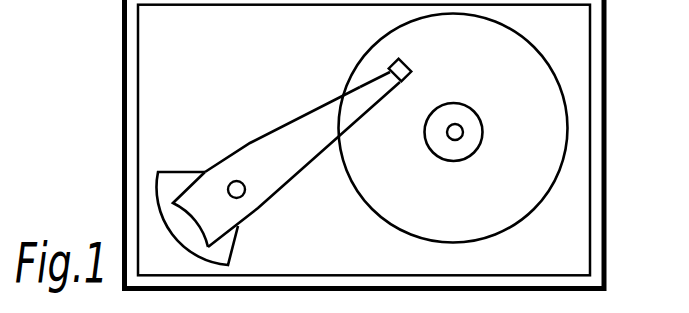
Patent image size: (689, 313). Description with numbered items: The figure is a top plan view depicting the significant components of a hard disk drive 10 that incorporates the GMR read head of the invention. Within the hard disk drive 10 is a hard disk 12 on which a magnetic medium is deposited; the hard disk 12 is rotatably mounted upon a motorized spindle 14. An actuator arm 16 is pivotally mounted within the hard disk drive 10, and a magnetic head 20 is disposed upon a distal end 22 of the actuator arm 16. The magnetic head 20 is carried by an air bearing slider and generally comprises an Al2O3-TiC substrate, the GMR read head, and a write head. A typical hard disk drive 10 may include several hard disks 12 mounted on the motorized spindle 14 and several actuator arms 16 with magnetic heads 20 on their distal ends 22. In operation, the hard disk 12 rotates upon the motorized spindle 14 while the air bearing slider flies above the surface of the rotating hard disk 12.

The hard disk drive 10 is at (124, 129).
The hard disk 12 is at (370, 198).
The motorized spindle 14 is at (493, 113).
The actuator arm 16 is at (303, 116).
The magnetic head 20 is at (410, 66).
The distal end 22 is at (383, 78).